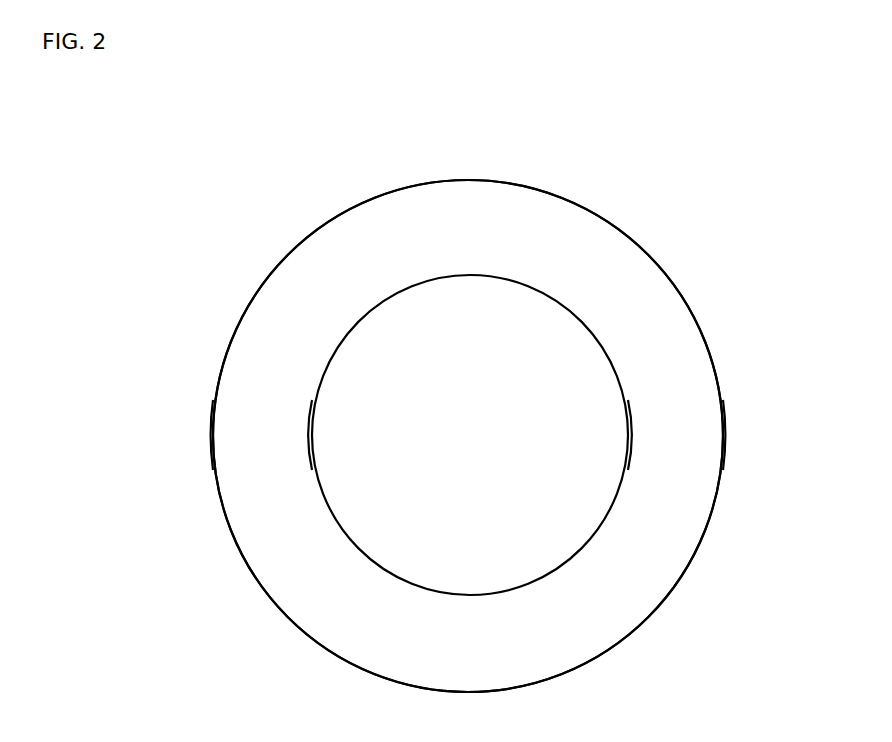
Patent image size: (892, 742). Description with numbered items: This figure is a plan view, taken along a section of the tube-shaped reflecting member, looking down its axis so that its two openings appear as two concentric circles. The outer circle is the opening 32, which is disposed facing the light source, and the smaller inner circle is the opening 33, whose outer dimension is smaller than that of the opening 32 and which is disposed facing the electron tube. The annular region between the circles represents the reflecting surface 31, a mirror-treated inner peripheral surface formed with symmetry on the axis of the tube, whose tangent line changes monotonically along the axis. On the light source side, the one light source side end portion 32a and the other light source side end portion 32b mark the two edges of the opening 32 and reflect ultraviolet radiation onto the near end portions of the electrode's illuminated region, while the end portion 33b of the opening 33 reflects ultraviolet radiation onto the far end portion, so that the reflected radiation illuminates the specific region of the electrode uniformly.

The reflecting surface 31 is at (565, 212).
The opening 32 is at (470, 180).
The opening 33 is at (470, 276).
The light source side end portion 32a is at (213, 435).
The light source side end portion 32b is at (311, 438).
The end portion 33b is at (628, 438).